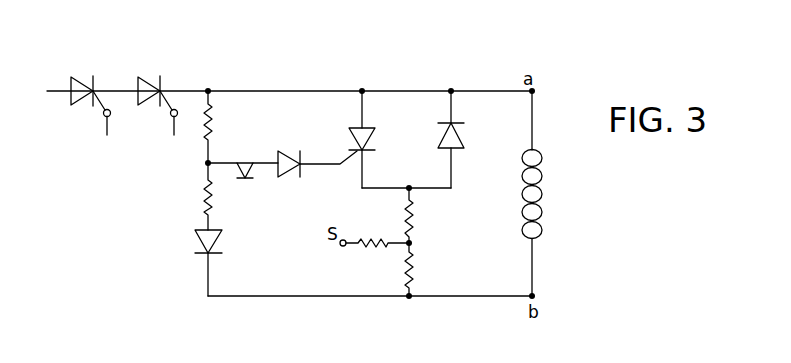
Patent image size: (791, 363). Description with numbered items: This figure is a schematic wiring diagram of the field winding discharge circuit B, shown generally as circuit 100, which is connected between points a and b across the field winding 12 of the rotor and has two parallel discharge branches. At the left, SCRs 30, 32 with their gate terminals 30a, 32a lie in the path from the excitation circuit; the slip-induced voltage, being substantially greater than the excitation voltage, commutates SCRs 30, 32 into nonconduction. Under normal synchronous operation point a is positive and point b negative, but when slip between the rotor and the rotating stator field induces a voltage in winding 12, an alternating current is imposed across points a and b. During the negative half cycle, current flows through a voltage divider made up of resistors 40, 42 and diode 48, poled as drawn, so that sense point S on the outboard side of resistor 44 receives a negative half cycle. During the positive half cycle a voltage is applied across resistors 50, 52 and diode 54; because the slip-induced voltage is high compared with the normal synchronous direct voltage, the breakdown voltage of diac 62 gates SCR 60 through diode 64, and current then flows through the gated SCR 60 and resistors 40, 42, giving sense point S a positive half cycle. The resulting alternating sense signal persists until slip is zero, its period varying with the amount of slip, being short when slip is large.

The field winding discharge circuit B is at (334, 58).
The rotor winding control circuit 100 is at (550, 79).
The field winding 12 is at (548, 152).
The SCR 30 is at (84, 82).
The gate terminal of thyristor 30 30a is at (104, 116).
The SCR 32 is at (157, 82).
The gate terminal of thyristor 32 32a is at (171, 116).
The resistor 40 is at (412, 220).
The resistor 42 is at (412, 284).
The resistor 44 is at (364, 250).
The diode 48 is at (460, 138).
The resistor 50 is at (209, 124).
The resistor 52 is at (205, 200).
The diode 54 is at (215, 240).
The SCR 60 is at (370, 145).
The diac 62 is at (248, 181).
The diode 64 is at (282, 156).